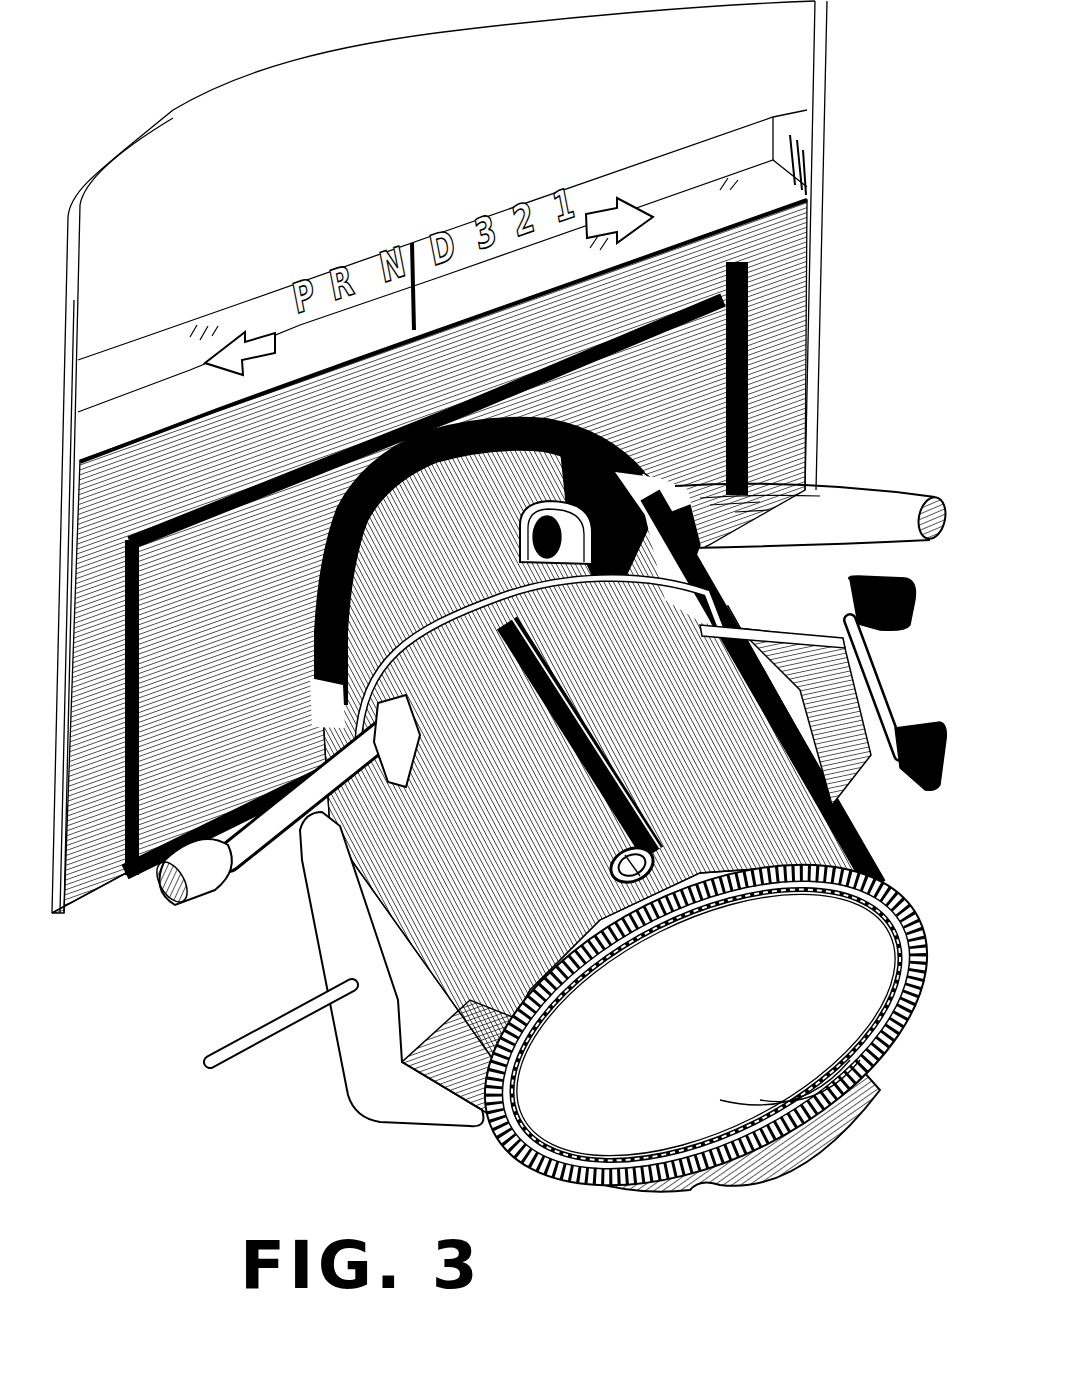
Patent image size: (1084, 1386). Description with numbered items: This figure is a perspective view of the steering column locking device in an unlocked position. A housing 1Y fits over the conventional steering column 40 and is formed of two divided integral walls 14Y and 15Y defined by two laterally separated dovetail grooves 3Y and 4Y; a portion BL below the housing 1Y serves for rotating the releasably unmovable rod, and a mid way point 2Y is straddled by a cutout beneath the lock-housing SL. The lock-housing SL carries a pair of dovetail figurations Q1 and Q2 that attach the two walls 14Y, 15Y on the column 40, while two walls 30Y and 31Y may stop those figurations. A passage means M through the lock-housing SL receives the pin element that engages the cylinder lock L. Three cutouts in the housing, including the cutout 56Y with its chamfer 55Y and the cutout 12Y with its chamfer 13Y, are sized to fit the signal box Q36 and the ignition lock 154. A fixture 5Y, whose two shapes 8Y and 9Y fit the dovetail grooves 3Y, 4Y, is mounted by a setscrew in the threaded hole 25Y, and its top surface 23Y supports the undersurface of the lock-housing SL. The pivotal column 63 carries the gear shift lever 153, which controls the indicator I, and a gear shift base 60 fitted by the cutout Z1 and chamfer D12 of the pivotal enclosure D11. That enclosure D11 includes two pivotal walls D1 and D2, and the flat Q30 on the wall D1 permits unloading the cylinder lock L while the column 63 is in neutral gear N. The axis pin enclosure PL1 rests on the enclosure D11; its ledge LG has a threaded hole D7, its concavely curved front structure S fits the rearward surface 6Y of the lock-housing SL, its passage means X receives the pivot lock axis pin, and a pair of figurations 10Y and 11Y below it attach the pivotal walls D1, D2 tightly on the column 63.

The indicator I is at (425, 284).
The pivotal wall D1 is at (481, 569).
The pivotal wall D2 is at (606, 511).
The chamfer D12 is at (623, 478).
The gear shift lever 153 is at (922, 500).
The gear shift base 60 is at (790, 572).
The cutout Z1 is at (712, 575).
The axis pin enclosure PL1 is at (447, 457).
The figuration 11Y is at (440, 515).
The flat Q30 is at (455, 512).
The passage means X is at (533, 535).
The neutral gear N is at (556, 532).
The concavely curved front structure S is at (548, 560).
The figuration 10Y is at (636, 563).
The threaded hole 25Y is at (470, 592).
The rearward surface 6Y is at (515, 609).
The threaded hole D7 is at (554, 606).
The ledge LG is at (540, 661).
The pivotal column 63 is at (738, 640).
The fixture 5Y is at (482, 627).
The shape 8Y is at (535, 625).
The top surface 23Y is at (490, 635).
The chamfer 13Y is at (785, 715).
The ignition lock 154 is at (905, 625).
The shape 9Y is at (485, 655).
The cutout 56Y is at (390, 705).
The dovetail groove 4Y is at (495, 672).
The dovetail figuration Q1 is at (600, 716).
The lock-housing SL is at (540, 722).
The dovetail groove 3Y is at (630, 760).
The pivotal enclosure D11 is at (332, 715).
The dovetail figuration Q2 is at (540, 755).
The cutout 12Y is at (845, 800).
The wall 30Y is at (640, 842).
The chamfer 55Y is at (460, 798).
The integral wall 14Y is at (900, 865).
The cylinder lock L is at (656, 866).
The wall 31Y is at (615, 855).
The passage means M is at (580, 845).
The signal box Q36 is at (410, 969).
The steering column 40 is at (900, 960).
The mid way point 2Y is at (660, 910).
The integral wall 15Y is at (485, 1128).
The housing 1Y is at (526, 1150).
The portion below housing BL is at (860, 1100).